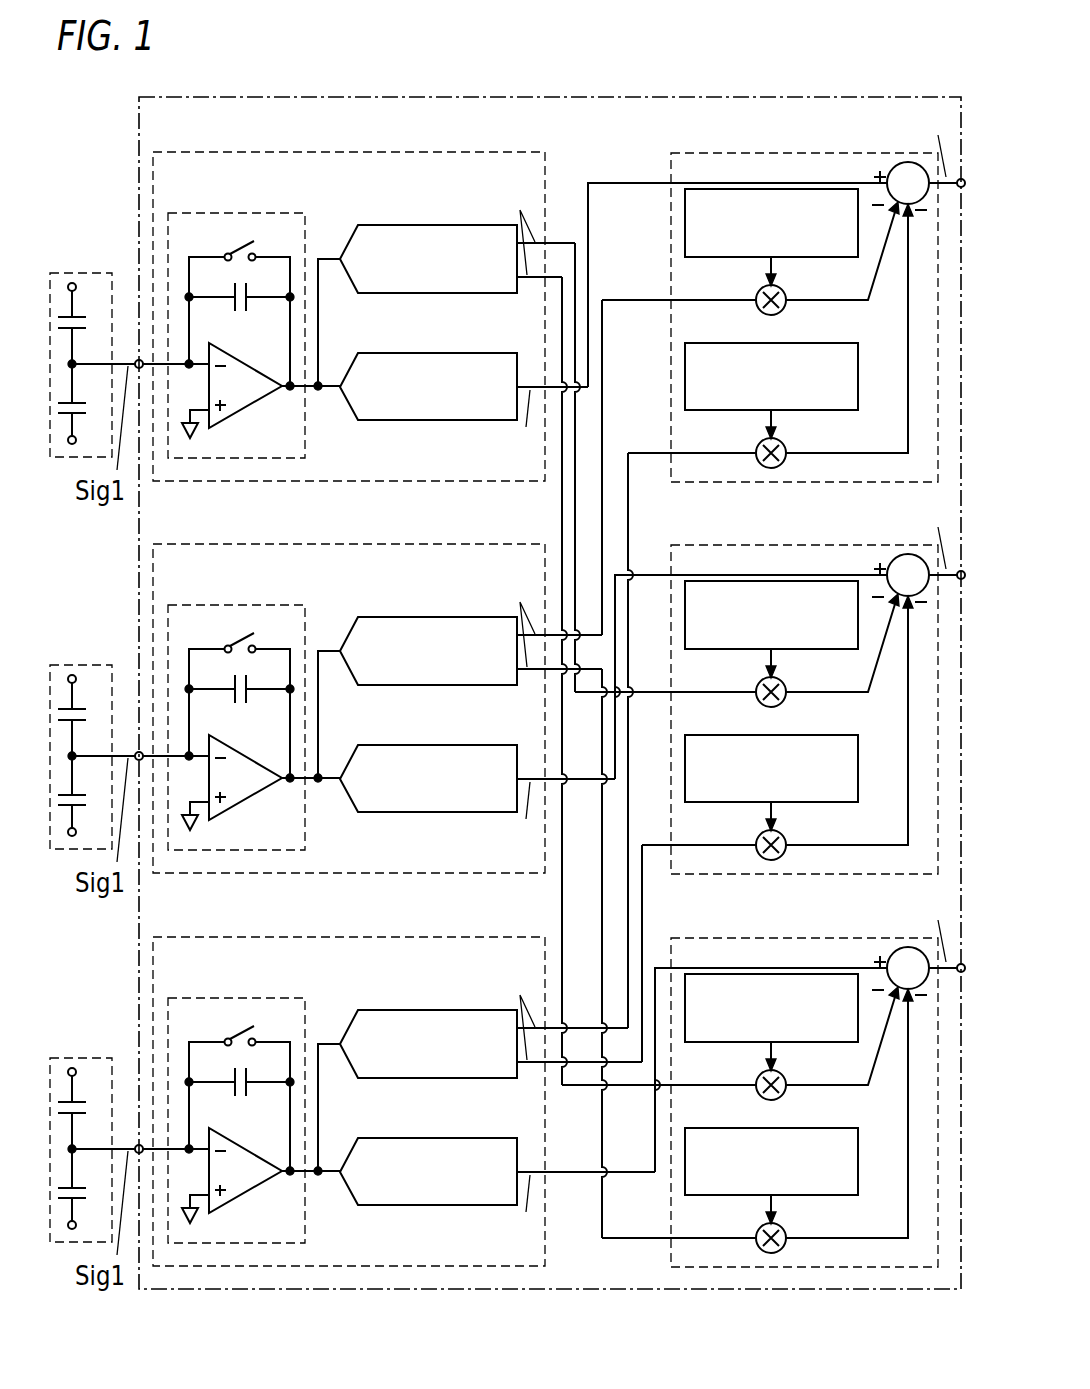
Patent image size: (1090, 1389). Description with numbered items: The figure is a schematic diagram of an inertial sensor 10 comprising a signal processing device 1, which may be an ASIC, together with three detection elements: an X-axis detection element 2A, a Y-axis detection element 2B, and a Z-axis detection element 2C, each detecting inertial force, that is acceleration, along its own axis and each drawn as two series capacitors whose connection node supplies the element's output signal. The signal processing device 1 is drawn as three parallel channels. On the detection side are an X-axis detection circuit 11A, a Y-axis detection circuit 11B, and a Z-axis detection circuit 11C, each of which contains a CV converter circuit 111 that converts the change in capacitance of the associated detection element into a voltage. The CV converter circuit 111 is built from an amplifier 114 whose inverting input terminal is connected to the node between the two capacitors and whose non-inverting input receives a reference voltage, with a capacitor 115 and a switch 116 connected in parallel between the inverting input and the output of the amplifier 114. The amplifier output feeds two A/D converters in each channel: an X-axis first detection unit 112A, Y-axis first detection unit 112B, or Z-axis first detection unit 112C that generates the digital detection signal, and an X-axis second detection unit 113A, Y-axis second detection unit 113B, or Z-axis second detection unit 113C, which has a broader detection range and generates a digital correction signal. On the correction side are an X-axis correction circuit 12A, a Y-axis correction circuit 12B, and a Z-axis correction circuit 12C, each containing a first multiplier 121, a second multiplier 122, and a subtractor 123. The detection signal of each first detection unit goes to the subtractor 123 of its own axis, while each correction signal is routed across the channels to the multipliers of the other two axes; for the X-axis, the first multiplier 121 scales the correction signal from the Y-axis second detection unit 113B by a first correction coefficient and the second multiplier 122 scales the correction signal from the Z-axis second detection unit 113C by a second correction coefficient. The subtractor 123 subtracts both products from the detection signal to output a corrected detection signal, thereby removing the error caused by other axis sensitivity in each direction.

The signal processing device 1 is at (630, 90).
The inertial sensor 10 is at (118, 132).
The X-axis detection element 2A is at (65, 272).
The Y-axis detection element 2B is at (84, 730).
The Z-axis detection element 2C is at (84, 1123).
The X-axis detection circuit 11A is at (183, 152).
The Y-axis detection circuit 11B is at (349, 687).
The Z-axis detection circuit 11C is at (349, 1080).
The X-axis correction circuit 12A is at (728, 152).
The Y-axis correction circuit 12B is at (813, 686).
The Z-axis correction circuit 12C is at (813, 1079).
The CV converter circuit 111 is at (226, 212).
The X-axis first detection unit 112A is at (383, 352).
The Y-axis first detection unit 112B is at (440, 775).
The Z-axis first detection unit 112C is at (440, 1168).
The X-axis second detection unit 113A is at (392, 226).
The Y-axis second detection unit 113B is at (429, 669).
The Z-axis second detection unit 113C is at (429, 1062).
The amplifier 114 is at (251, 398).
The capacitor 115 is at (242, 313).
The switch 116 is at (243, 696).
The first multiplier 121 is at (783, 309).
The second multiplier 122 is at (783, 445).
The subtractor 123 is at (897, 172).